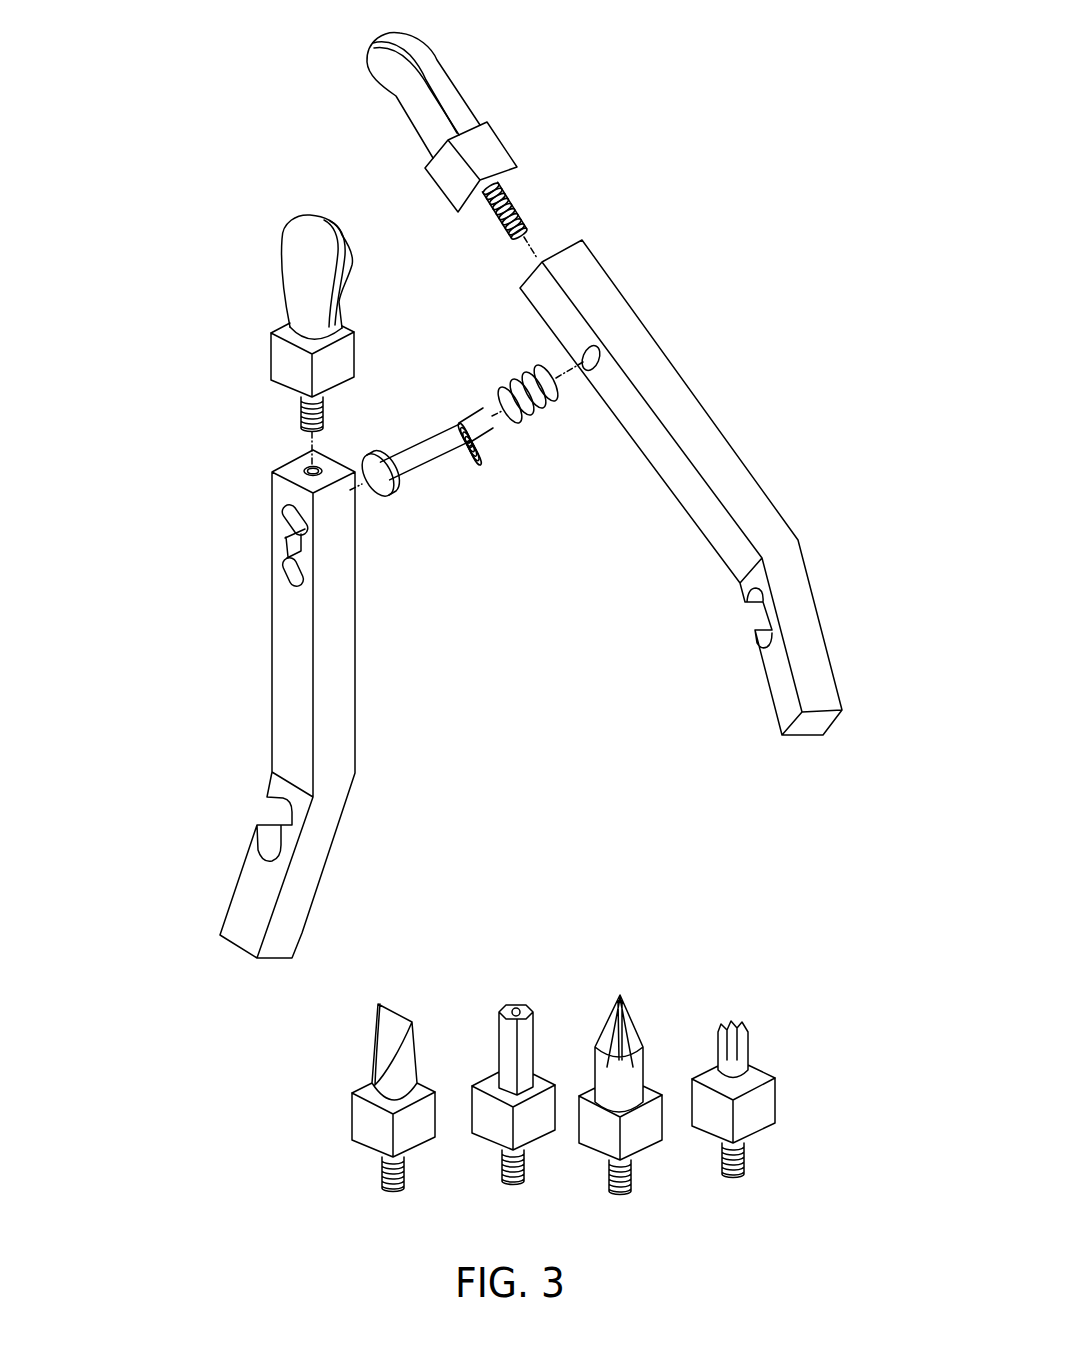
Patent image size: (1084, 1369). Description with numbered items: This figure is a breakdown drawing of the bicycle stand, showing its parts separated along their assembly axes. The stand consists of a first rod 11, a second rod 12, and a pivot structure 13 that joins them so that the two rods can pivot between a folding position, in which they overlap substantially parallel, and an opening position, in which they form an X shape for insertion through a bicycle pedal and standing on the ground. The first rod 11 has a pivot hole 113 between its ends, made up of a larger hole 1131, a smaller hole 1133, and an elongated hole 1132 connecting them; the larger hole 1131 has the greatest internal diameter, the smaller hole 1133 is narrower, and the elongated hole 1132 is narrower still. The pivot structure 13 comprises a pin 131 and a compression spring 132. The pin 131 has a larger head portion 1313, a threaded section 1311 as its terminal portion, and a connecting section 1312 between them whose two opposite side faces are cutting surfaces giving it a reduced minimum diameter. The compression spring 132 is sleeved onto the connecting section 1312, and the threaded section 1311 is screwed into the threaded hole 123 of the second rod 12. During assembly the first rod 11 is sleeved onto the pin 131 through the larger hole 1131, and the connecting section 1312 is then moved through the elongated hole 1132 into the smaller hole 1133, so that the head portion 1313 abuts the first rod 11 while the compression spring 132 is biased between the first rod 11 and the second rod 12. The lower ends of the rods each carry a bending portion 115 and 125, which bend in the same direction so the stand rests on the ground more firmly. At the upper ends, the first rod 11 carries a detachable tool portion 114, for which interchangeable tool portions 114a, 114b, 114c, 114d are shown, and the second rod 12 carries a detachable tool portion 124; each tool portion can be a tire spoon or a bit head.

The first rod 11 is at (231, 704).
The second rod 12 is at (681, 499).
The pivot structure 13 is at (508, 530).
The pivot hole 113 is at (208, 545).
The larger hole 1131 is at (282, 516).
The elongated hole 1132 is at (292, 550).
The smaller hole 1133 is at (239, 580).
The tool portion 114 is at (294, 263).
The tool portion 114a is at (378, 1046).
The tool portion 114b is at (498, 1032).
The tool portion 114c is at (607, 1027).
The tool portion 114d is at (725, 1030).
The bending portion 115 is at (253, 893).
The threaded hole 123 is at (593, 372).
The tool portion 124 is at (423, 57).
The bending portion 125 is at (807, 670).
The pin 131 is at (461, 531).
The threaded section 1311 is at (490, 430).
The connecting section 1312 is at (417, 450).
The head portion 1313 is at (385, 497).
The compression spring 132 is at (557, 397).